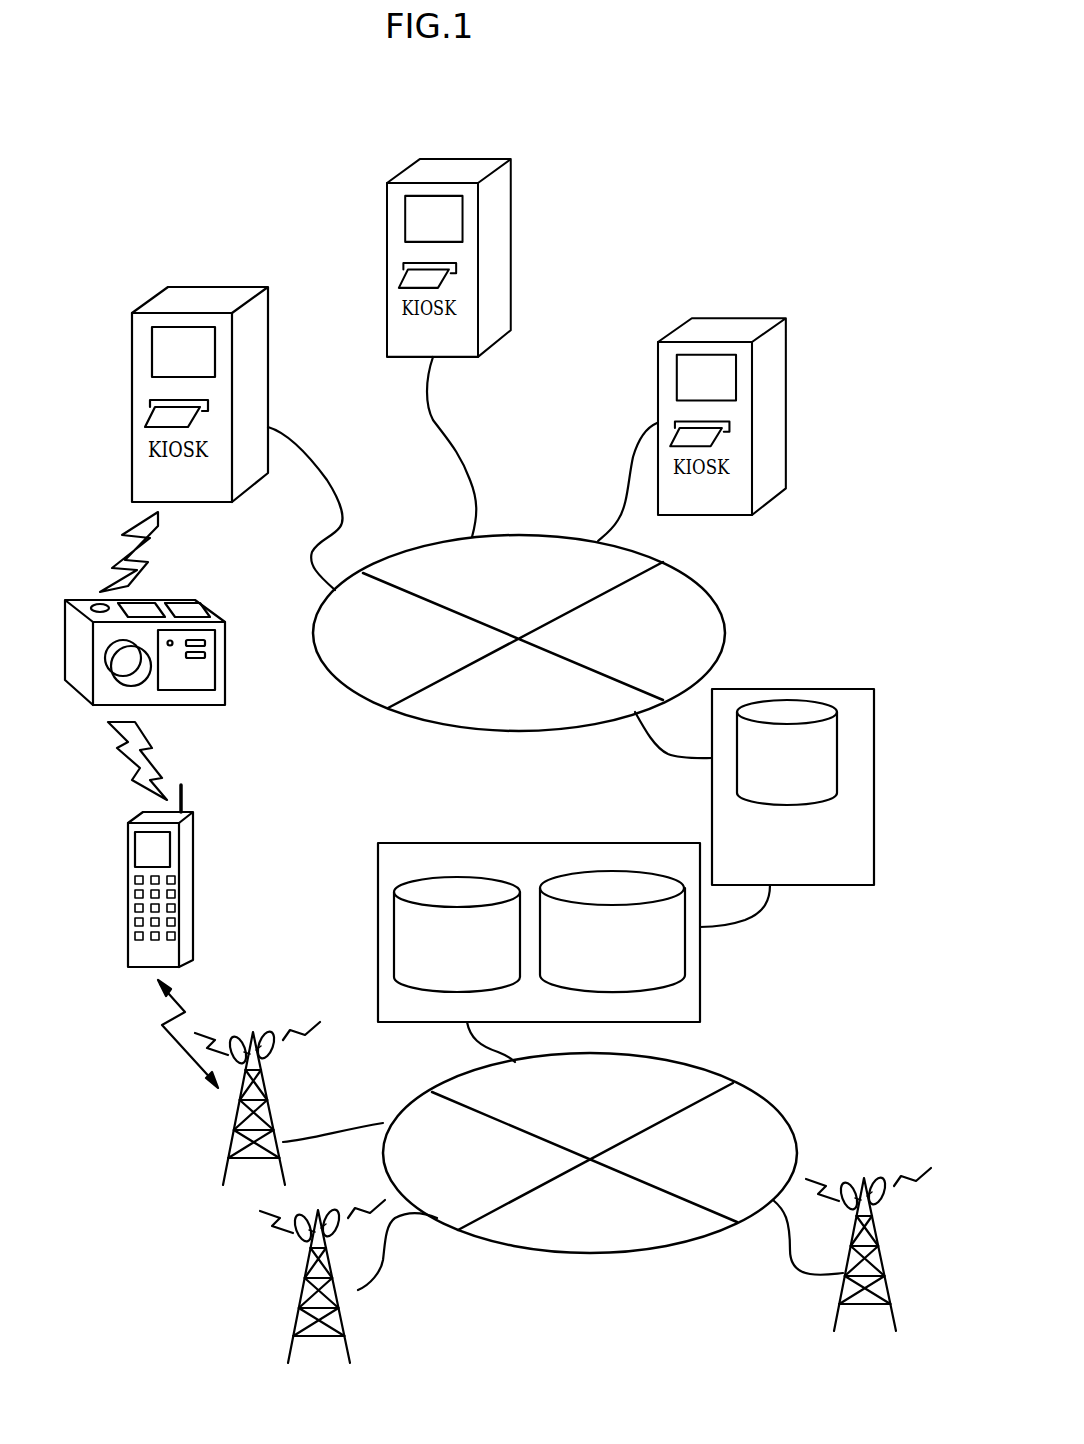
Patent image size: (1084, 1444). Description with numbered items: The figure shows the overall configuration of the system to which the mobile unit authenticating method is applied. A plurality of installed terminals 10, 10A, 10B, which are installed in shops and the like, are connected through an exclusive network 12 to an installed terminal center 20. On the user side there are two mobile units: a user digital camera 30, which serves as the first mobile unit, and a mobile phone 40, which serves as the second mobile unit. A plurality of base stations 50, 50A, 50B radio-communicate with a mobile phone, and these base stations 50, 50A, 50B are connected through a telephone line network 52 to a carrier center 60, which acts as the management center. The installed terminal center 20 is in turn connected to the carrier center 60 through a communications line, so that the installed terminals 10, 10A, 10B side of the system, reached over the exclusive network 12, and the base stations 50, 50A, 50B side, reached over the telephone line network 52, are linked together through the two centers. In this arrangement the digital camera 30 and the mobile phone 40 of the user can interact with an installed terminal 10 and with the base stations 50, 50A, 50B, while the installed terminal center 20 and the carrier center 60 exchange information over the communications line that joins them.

The installed terminal 10 is at (221, 290).
The installed terminal 10A is at (457, 160).
The installed terminal 10B is at (742, 318).
The exclusive network 12 is at (722, 615).
The installed terminal center 20 is at (818, 690).
The user digital camera 30 is at (185, 598).
The mobile phone 40 is at (188, 883).
The base station 50 is at (237, 1110).
The base station 50A is at (307, 1280).
The base station 50B is at (837, 1302).
The telephone line network 52 is at (768, 1110).
The carrier center 60 is at (590, 843).